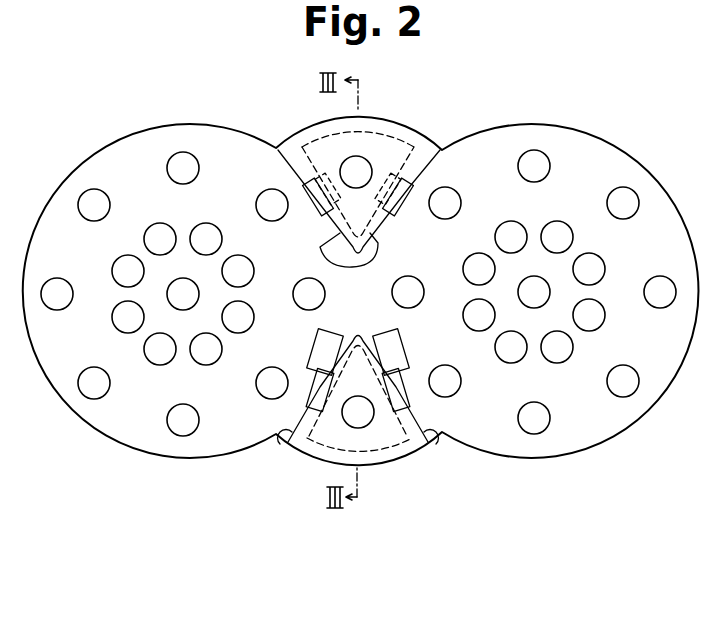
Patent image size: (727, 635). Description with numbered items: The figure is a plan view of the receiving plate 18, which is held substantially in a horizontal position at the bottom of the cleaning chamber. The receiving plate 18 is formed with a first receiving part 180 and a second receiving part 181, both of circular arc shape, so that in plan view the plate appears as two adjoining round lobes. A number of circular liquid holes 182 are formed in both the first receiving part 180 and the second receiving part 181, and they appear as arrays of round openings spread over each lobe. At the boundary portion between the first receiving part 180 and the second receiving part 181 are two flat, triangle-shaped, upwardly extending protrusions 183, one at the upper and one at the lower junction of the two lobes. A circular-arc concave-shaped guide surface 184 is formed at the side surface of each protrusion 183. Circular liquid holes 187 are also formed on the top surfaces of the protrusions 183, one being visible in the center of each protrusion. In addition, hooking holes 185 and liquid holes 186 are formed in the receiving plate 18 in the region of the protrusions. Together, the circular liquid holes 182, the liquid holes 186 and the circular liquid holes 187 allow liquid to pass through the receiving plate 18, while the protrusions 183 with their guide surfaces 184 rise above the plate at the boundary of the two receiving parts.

The receiving plate 18 is at (682, 565).
The first receiving part 180 is at (272, 518).
The second receiving part 181 is at (682, 518).
The circular liquid holes 182 is at (95, 197).
The protrusions 183 is at (292, 142).
The guide surface 184 is at (320, 247).
The hooking holes 185 is at (312, 380).
The liquid holes 186 is at (315, 190).
The circular liquid holes 187 is at (358, 166).